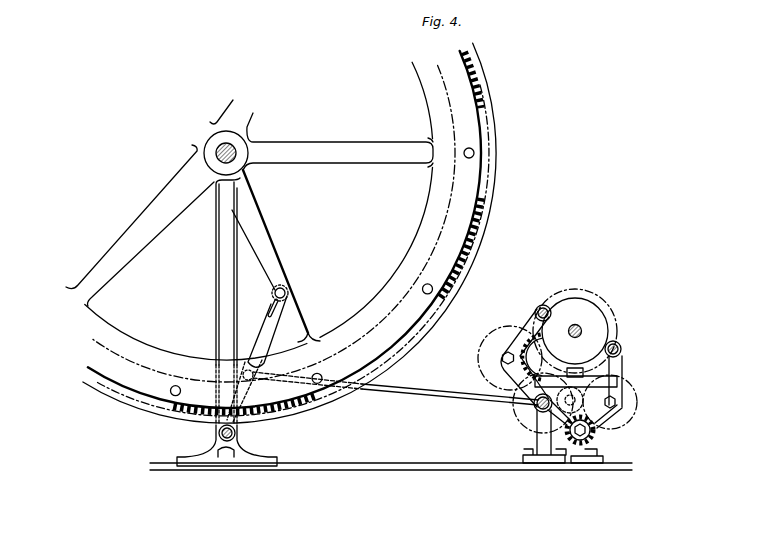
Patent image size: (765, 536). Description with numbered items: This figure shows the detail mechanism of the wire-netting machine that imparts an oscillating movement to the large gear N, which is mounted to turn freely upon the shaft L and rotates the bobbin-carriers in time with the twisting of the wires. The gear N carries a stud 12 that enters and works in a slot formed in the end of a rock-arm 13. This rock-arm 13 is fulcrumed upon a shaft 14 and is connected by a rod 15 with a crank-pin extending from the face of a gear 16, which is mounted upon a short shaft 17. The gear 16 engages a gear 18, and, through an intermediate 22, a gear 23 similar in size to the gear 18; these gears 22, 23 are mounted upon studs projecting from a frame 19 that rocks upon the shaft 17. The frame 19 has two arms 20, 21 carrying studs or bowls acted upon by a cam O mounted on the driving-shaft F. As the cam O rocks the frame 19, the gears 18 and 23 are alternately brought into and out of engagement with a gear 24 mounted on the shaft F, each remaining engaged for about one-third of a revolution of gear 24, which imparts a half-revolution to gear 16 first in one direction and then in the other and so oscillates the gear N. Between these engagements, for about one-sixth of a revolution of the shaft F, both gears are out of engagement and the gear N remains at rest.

The shaft L is at (232, 158).
The large gear N is at (275, 223).
The stud 12 is at (287, 291).
The rock-arm 13 is at (257, 359).
The shaft 14 is at (237, 437).
The rod 15 is at (450, 386).
The gear 16 is at (526, 420).
The short shaft 17 is at (532, 405).
The gear 18 is at (495, 338).
The frame 19 is at (577, 403).
The arm 20 is at (621, 355).
The arm 21 is at (537, 312).
The intermediate gear 22 is at (593, 438).
The gear 23 is at (638, 407).
The gear 24 is at (575, 289).
The driving-shaft F is at (578, 327).
The cam O is at (575, 342).